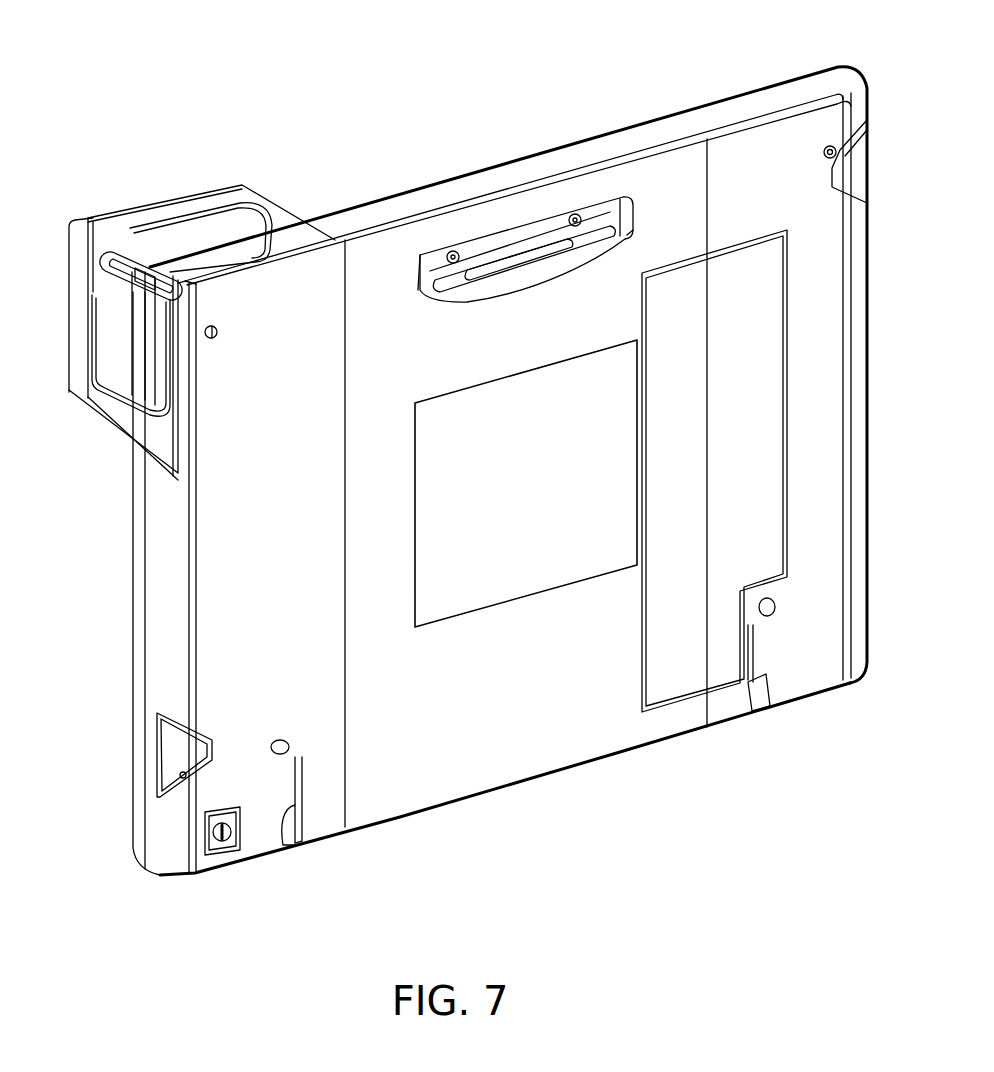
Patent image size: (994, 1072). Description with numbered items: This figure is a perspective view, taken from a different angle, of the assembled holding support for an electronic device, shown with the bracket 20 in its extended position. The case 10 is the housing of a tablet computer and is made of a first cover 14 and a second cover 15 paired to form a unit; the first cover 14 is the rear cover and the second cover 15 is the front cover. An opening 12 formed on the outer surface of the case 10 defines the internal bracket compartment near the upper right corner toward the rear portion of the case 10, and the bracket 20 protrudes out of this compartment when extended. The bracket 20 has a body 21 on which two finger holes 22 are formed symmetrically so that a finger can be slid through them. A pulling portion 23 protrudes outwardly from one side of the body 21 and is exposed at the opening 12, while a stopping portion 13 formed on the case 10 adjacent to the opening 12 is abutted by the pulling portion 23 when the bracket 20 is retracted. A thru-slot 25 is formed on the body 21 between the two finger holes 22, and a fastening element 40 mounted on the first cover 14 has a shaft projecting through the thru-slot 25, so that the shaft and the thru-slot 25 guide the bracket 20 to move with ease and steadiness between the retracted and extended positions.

The case 10 is at (468, 92).
The opening 12 is at (152, 367).
The stopping portion 13 is at (185, 280).
The first cover 14 is at (505, 768).
The second cover 15 is at (483, 178).
The bracket 20 is at (250, 186).
The body 21 is at (167, 435).
The finger hole 22 is at (185, 215).
The pulling portion 23 is at (92, 243).
The thru-slot 25 is at (132, 258).
The fastening element 40 is at (216, 345).